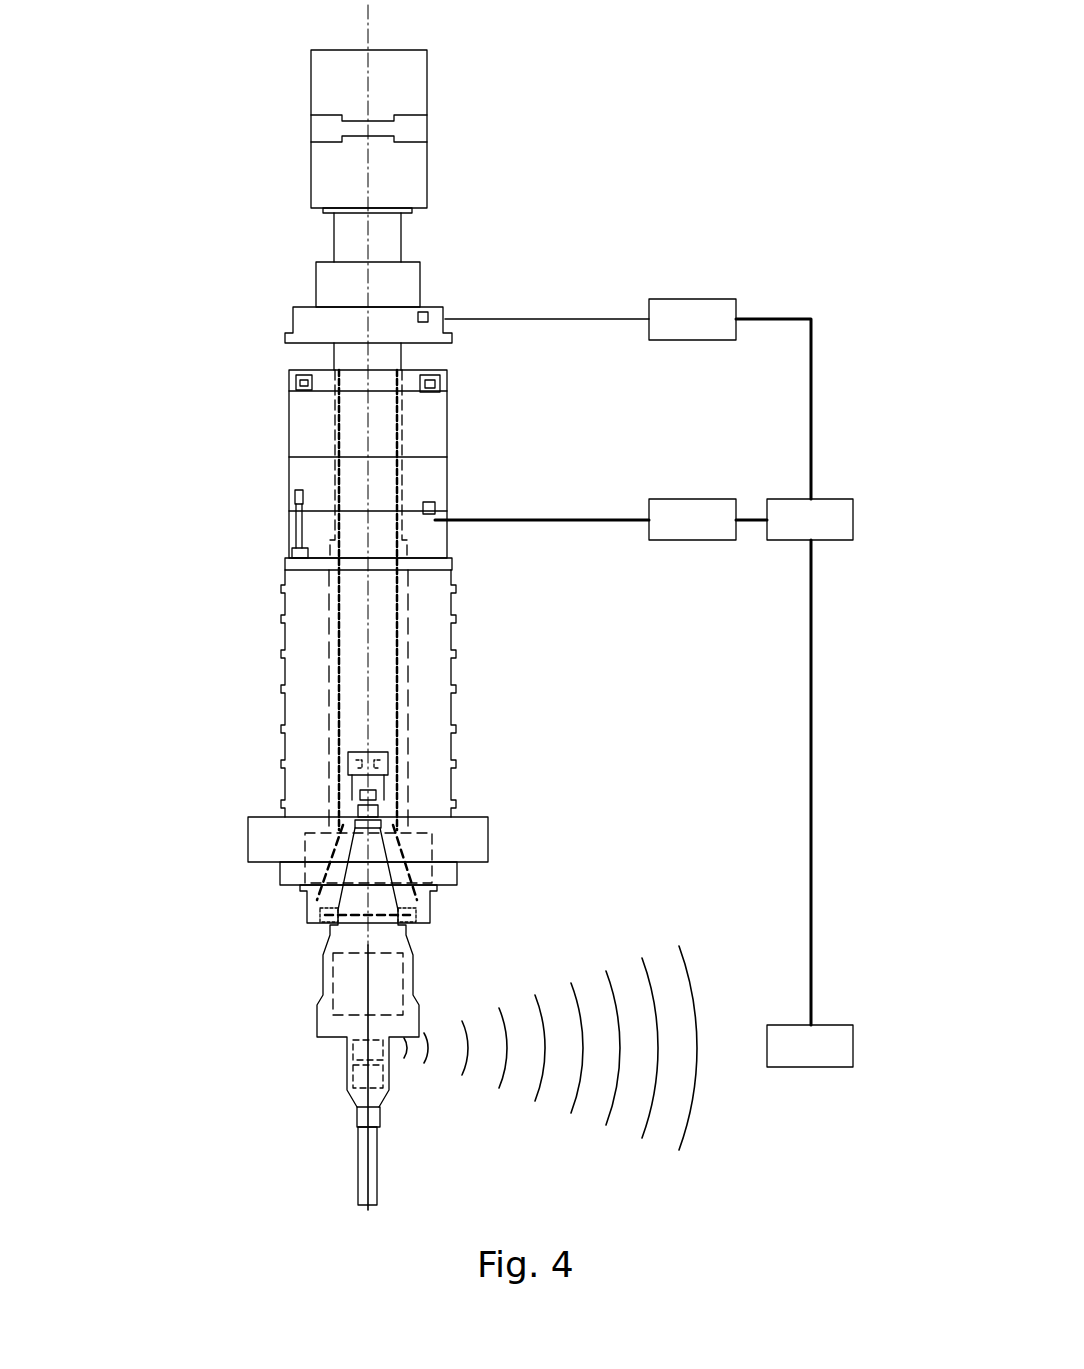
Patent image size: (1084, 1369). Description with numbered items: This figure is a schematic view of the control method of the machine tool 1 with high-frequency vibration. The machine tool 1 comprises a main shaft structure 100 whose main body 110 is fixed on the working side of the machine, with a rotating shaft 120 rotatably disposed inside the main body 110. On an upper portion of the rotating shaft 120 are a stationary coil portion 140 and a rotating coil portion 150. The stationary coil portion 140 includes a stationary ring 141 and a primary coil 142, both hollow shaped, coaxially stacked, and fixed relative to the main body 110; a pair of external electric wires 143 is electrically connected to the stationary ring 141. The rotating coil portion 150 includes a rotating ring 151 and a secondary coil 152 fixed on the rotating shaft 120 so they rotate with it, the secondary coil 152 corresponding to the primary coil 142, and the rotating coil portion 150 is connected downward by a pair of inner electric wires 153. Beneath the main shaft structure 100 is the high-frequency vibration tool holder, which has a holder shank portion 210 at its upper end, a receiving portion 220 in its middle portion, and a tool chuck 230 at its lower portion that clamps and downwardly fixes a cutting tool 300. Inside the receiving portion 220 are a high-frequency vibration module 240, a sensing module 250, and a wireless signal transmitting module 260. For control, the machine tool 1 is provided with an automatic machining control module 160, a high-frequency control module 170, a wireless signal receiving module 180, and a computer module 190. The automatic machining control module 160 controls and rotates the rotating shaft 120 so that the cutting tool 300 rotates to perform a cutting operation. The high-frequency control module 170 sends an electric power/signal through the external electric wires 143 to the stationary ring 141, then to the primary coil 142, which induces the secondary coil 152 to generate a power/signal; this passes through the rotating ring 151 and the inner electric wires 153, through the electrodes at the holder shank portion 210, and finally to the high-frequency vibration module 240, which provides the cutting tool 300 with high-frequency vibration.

The machine tool 1 is at (818, 44).
The main shaft structure 100 is at (470, 472).
The main body 110 is at (443, 640).
The rotating shaft 120 is at (405, 697).
The stationary coil portion 140 is at (217, 511).
The stationary ring 141 is at (289, 530).
The primary coil 142 is at (289, 482).
The external electric wires 143 is at (500, 520).
The rotating coil portion 150 is at (281, 401).
The rotating ring 151 is at (289, 383).
The secondary coil 152 is at (289, 424).
The inner electric wires 153 is at (330, 655).
The automatic machining control module 160 is at (716, 333).
The high-frequency control module 170 is at (716, 533).
The wireless signal receiving module 180 is at (834, 1060).
The computer module 190 is at (834, 533).
The holder shank portion 210 is at (307, 872).
The receiving portion 220 is at (323, 972).
The tool chuck 230 is at (357, 1118).
The high-frequency vibration module 240 is at (403, 972).
The sensing module 250 is at (345, 1080).
The wireless signal transmitting module 260 is at (348, 1043).
The cutting tool 300 is at (375, 1150).